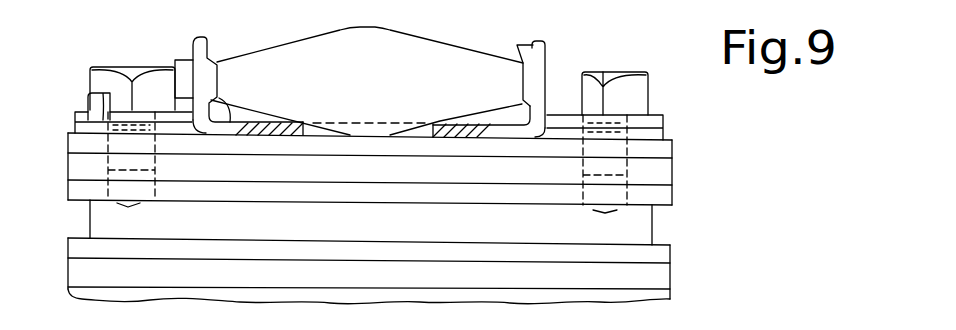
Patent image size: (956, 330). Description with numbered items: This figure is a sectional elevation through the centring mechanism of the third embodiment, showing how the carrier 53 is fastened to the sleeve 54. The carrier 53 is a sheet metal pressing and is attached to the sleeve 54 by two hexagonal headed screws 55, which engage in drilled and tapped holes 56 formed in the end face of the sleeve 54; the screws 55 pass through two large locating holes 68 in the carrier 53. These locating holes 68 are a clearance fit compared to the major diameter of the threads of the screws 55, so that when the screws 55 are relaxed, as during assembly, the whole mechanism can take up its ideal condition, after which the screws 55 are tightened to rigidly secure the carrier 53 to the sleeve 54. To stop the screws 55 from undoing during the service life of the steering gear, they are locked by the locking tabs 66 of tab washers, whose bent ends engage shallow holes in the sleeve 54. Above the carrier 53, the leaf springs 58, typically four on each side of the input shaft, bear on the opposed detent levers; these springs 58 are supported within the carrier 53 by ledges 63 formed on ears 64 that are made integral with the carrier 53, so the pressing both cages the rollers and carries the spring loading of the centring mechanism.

The carrier 53 is at (202, 73).
The sleeve 54 is at (637, 223).
The hexagonal headed screws 55 is at (100, 80).
The drilled and tapped holes 56 is at (110, 188).
The leaf springs 58 is at (463, 62).
The ledges 63 is at (538, 100).
The ears 64 is at (582, 88).
The locking tabs 66 is at (88, 100).
The locating holes 68 is at (110, 135).